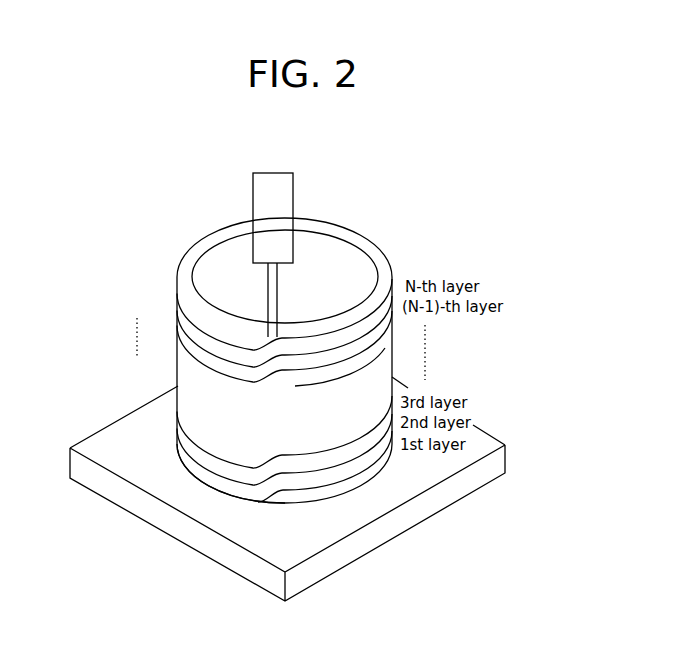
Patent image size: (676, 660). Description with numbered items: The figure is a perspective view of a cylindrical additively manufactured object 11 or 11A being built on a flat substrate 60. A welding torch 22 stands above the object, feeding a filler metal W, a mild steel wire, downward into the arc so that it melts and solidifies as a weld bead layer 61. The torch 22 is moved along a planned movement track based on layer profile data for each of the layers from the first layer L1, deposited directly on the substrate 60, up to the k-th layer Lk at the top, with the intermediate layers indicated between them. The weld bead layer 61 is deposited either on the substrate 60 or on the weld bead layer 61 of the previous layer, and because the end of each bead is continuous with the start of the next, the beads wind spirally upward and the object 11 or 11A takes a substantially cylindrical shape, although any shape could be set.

The additively manufactured object 11 is at (290, 353).
The additively manufactured object 11A is at (290, 395).
The welding torch 22 is at (283, 192).
The filler metal W is at (283, 293).
The substrate 60 is at (312, 533).
The weld bead layer 61 is at (352, 450).
The layer Lk is at (188, 318).
The layer L1 is at (188, 462).